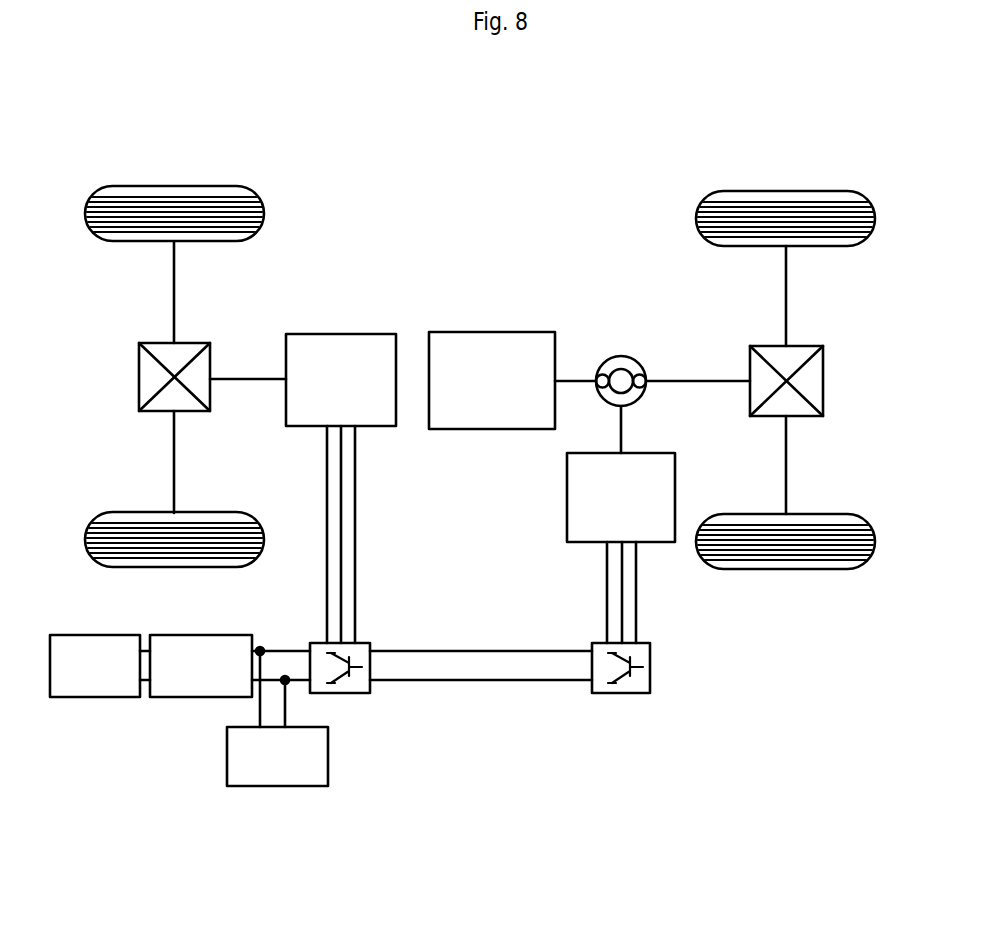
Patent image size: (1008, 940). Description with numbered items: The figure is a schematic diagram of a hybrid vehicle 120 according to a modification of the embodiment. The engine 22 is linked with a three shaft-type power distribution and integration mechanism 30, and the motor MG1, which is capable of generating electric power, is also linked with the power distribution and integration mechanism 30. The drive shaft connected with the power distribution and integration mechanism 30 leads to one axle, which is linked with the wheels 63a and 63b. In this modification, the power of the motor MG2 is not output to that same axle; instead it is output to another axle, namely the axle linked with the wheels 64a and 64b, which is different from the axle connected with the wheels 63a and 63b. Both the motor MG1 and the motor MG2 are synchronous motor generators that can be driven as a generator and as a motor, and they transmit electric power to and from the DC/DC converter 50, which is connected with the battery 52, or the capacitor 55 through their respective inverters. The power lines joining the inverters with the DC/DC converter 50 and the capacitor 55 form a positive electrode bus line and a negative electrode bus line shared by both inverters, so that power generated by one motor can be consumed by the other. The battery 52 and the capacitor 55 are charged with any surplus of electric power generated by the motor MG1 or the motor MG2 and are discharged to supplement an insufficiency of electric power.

The hybrid vehicle 120 is at (515, 179).
The wheel 64a is at (174, 186).
The wheel 64b is at (174, 567).
The wheel 63a is at (786, 191).
The wheel 63b is at (786, 569).
The motor MG2 is at (339, 334).
The motor MG1 is at (567, 496).
The engine 22 is at (492, 332).
The power distribution and integration mechanism 30 is at (623, 356).
The battery 52 is at (100, 697).
The DC/DC converter 50 is at (200, 697).
The capacitor 55 is at (328, 755).